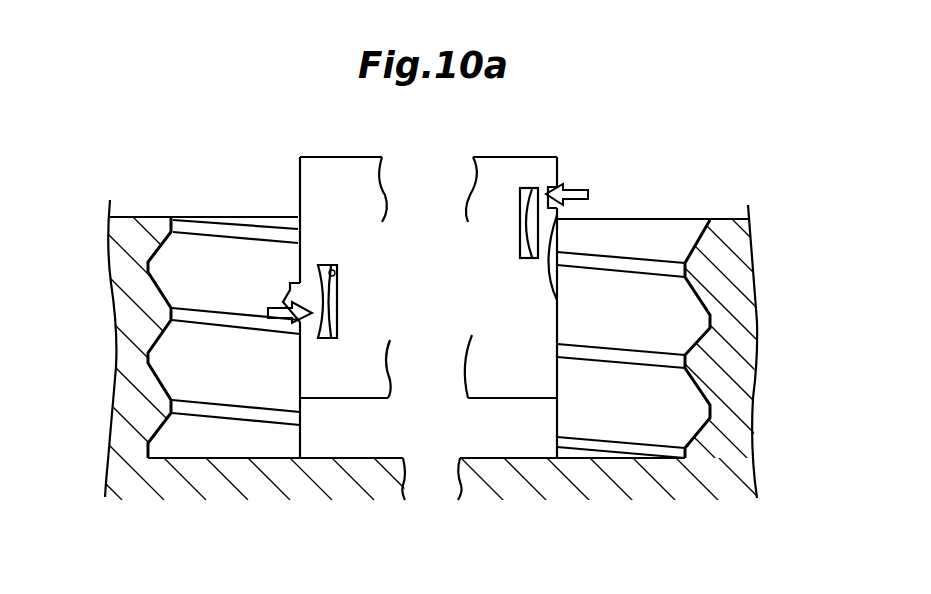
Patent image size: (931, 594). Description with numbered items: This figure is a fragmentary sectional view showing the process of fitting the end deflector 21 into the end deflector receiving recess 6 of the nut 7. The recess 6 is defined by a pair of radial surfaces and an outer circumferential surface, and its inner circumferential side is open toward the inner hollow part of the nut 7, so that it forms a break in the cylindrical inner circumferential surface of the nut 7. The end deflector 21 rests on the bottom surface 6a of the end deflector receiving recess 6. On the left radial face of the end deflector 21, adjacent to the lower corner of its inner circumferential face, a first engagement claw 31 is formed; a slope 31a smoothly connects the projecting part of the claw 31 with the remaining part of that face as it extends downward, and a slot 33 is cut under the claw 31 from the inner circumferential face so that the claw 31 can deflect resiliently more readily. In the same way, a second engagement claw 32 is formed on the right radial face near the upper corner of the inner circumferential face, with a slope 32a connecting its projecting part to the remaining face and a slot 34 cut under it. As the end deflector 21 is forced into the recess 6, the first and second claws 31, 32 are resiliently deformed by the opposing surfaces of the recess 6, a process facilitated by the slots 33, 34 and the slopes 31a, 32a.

The end deflector 21 is at (329, 149).
The first engagement claw 31 is at (289, 263).
The slope 31a is at (298, 316).
The second engagement claw 32 is at (566, 212).
The slope 32a is at (558, 246).
The slot 33 is at (338, 272).
The slot 34 is at (522, 248).
The nut 7 is at (690, 216).
The end deflector receiving recess 6 is at (308, 446).
The bottom surface 6a is at (360, 458).